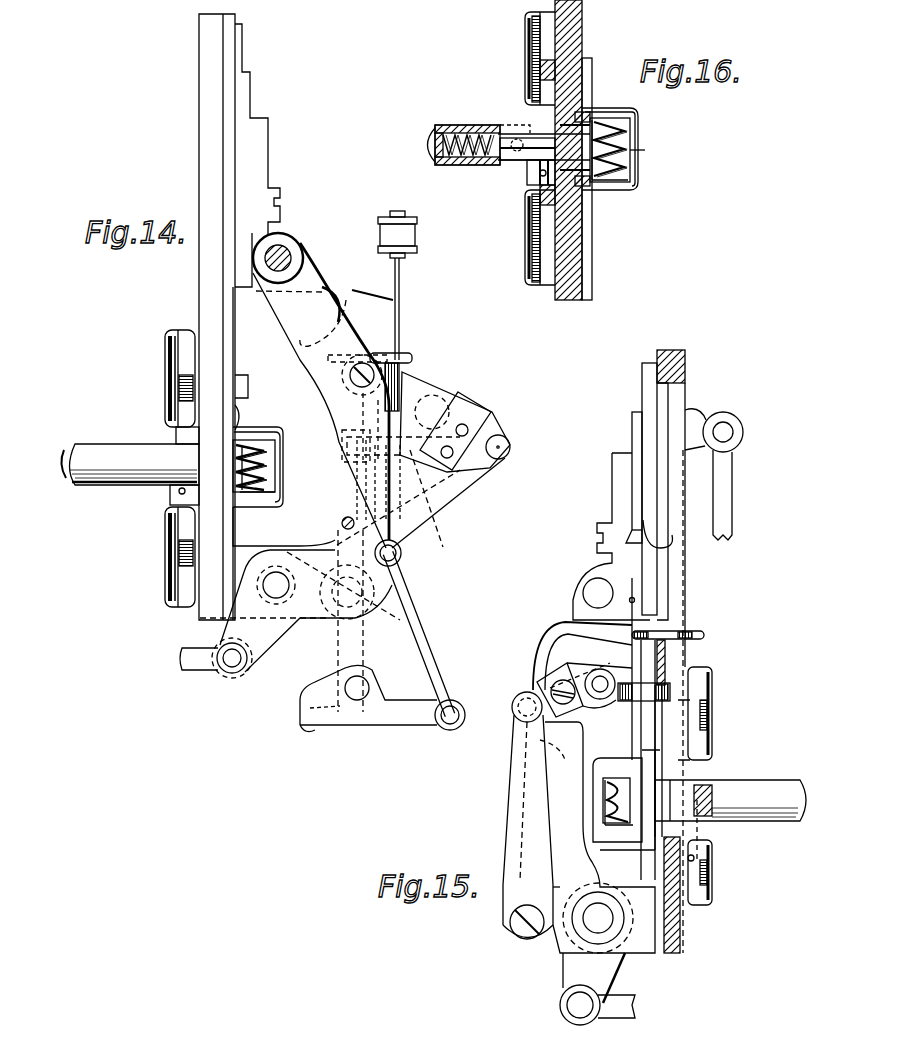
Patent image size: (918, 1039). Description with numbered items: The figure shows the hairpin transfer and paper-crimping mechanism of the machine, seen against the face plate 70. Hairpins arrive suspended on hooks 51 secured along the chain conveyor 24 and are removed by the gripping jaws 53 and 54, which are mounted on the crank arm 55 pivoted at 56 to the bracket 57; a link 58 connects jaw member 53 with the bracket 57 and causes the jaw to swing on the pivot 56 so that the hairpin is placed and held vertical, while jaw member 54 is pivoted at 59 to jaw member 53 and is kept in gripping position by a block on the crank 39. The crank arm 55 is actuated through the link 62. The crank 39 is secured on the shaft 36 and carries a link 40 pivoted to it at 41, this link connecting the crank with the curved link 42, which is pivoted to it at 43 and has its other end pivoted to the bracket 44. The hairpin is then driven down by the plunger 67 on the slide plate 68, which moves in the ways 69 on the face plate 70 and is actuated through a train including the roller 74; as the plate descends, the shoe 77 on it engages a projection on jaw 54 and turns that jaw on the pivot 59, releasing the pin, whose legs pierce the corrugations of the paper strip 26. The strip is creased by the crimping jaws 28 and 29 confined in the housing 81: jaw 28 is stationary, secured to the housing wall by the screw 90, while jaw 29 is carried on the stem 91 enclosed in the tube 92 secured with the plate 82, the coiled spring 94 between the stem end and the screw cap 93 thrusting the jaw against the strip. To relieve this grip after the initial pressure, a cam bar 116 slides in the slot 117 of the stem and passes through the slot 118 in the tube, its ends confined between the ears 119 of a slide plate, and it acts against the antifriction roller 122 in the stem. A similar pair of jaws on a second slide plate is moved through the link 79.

In FIG. 14, the face plate 70 is at (199, 72).
In FIG. 16, the face plate 70 is at (583, 30).
In FIG. 15, the face plate 70 is at (685, 395).
In FIG. 14, the shaft 36 is at (293, 262).
In FIG. 14, the crank arm 55 is at (445, 515).
In FIG. 15, the crank arm 55 is at (585, 738).
In FIG. 14, the crank 39 is at (340, 337).
In FIG. 14, the chain conveyor 24 is at (412, 232).
In FIG. 14, the hooks 51 is at (401, 277).
In FIG. 14, the pivot 59 is at (378, 356).
In FIG. 15, the pivot 59 is at (658, 632).
In FIG. 14, the gripping jaw 53 is at (400, 375).
In FIG. 15, the gripping jaw 53 is at (560, 670).
In FIG. 14, the link 58 is at (478, 480).
In FIG. 15, the link 58 is at (515, 735).
In FIG. 14, the pivot 41 is at (402, 555).
In FIG. 14, the link 40 is at (437, 668).
In FIG. 14, the pivot 43 is at (452, 713).
In FIG. 14, the curved link 42 is at (390, 727).
In FIG. 14, the bracket 44 is at (368, 669).
In FIG. 14, the link 62 is at (196, 672).
In FIG. 15, the link 62 is at (616, 1018).
In FIG. 14, the crimping jaw 28 is at (268, 468).
In FIG. 16, the crimping jaw 28 is at (632, 140).
In FIG. 15, the crimping jaw 28 is at (626, 800).
In FIG. 14, the housing 81 is at (283, 450).
In FIG. 16, the housing 81 is at (616, 186).
In FIG. 14, the crimping jaw 29 is at (243, 450).
In FIG. 16, the crimping jaw 29 is at (612, 135).
In FIG. 15, the crimping jaw 29 is at (617, 802).
In FIG. 14, the paper strip 26 is at (262, 485).
In FIG. 16, the paper strip 26 is at (625, 165).
In FIG. 15, the paper strip 26 is at (616, 835).
In FIG. 14, the tube 92 is at (128, 483).
In FIG. 16, the tube 92 is at (490, 125).
In FIG. 14, the screw cap 93 is at (68, 483).
In FIG. 16, the screw cap 93 is at (430, 150).
In FIG. 16, the ears 119 is at (540, 70).
In FIG. 16, the antifriction roller 122 is at (450, 165).
In FIG. 16, the coiled spring 94 is at (480, 165).
In FIG. 16, the slot 117 is at (512, 160).
In FIG. 16, the stem 91 is at (525, 133).
In FIG. 16, the slot 118 is at (504, 120).
In FIG. 16, the cam bar 116 is at (530, 175).
In FIG. 16, the plate 82 is at (598, 125).
In FIG. 15, the plate 82 is at (652, 845).
In FIG. 16, the screw 90 is at (640, 156).
In FIG. 15, the slide plate 68 is at (652, 393).
In FIG. 15, the ways 69 is at (660, 577).
In FIG. 15, the roller 74 is at (732, 493).
In FIG. 15, the plunger 67 is at (630, 520).
In FIG. 15, the shoe 77 is at (660, 548).
In FIG. 15, the gripping jaw 54 is at (645, 692).
In FIG. 15, the bracket 57 is at (553, 948).
In FIG. 15, the pivot 56 is at (605, 930).
In FIG. 15, the link 79 is at (716, 796).